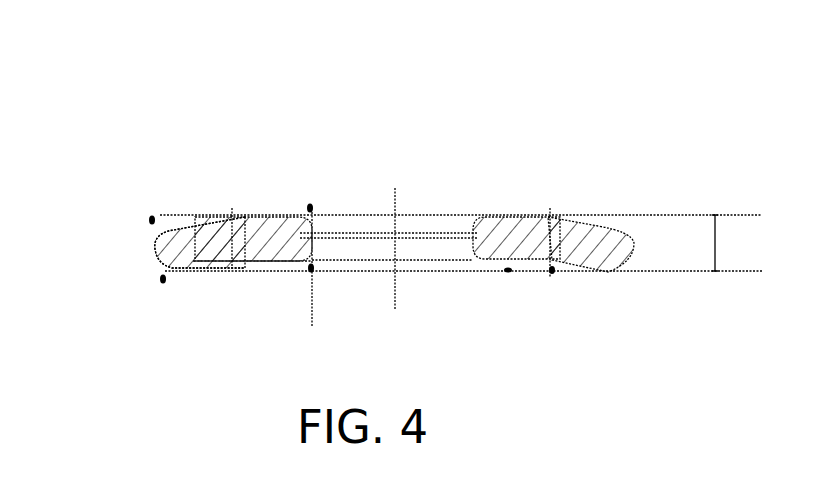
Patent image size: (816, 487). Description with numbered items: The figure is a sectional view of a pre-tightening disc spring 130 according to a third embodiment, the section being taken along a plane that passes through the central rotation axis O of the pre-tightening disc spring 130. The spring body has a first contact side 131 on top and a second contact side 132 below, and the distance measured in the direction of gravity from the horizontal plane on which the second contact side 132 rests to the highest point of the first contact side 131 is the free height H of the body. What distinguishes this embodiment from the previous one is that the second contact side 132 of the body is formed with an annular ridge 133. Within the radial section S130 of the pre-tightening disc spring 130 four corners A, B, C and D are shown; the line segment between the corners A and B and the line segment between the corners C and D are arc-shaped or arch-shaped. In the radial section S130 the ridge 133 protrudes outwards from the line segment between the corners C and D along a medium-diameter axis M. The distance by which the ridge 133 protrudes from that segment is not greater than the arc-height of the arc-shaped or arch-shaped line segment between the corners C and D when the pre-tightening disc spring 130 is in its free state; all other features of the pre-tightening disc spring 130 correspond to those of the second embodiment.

The pre-tightening disc spring 130 is at (424, 46).
The radial section S130 is at (201, 238).
The first contact side 131 is at (452, 213).
The second contact side 132 is at (457, 260).
The annular ridge 133 is at (233, 258).
The medium-diameter axis M is at (227, 226).
The central rotation axis O is at (403, 240).
The free height H is at (729, 243).
The corner A is at (160, 233).
The corner B is at (310, 215).
The corner C is at (321, 277).
The corner D is at (167, 258).